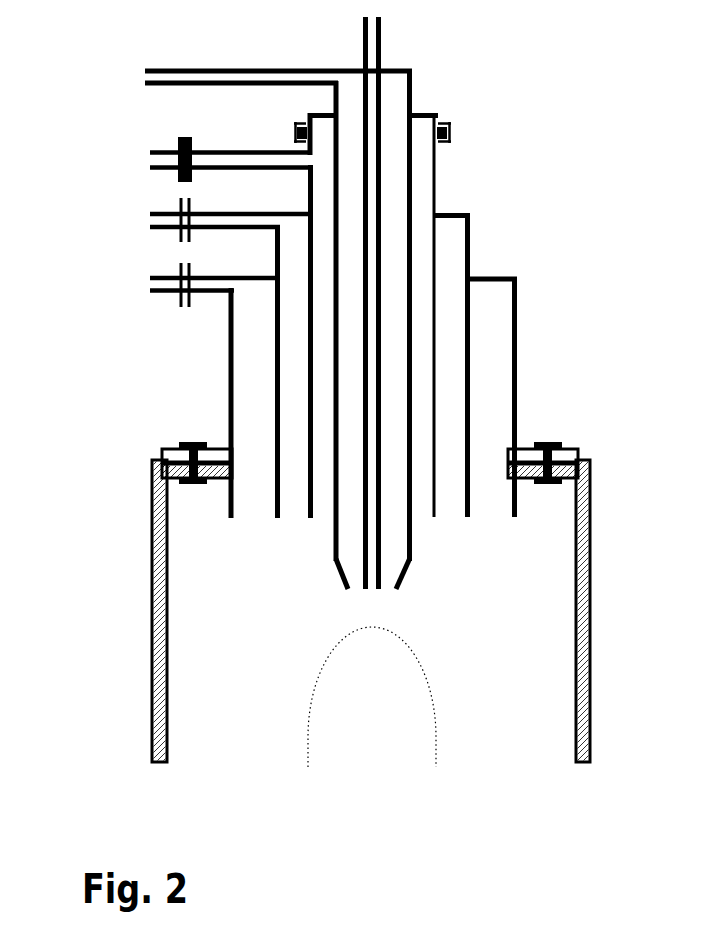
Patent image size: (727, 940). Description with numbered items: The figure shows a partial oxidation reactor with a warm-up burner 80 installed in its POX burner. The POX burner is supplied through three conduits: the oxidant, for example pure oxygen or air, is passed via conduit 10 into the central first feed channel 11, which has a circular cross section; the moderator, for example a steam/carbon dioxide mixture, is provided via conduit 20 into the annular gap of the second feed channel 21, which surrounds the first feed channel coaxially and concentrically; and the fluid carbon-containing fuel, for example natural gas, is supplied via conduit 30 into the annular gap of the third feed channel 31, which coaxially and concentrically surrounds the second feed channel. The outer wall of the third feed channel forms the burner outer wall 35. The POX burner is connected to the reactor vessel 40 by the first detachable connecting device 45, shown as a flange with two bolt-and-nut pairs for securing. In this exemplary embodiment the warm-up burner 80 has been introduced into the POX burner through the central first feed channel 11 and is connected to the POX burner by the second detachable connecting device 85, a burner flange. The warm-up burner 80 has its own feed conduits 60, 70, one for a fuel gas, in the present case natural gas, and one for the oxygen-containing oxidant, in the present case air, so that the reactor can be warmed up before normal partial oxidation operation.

The conduit 10 is at (218, 315).
The first feed channel 11 is at (422, 185).
The conduit 20 is at (205, 358).
The second feed channel 21 is at (473, 247).
The conduit 30 is at (189, 390).
The third feed channel 31 is at (500, 330).
The burner outer wall 35 is at (517, 367).
The reactor vessel 40 is at (152, 627).
The first detachable connecting device 45 is at (163, 453).
The feed conduit 60 is at (254, 308).
The feed conduit 70 is at (381, 23).
The warm-up burner 80 is at (333, 548).
The second detachable connecting device 85 is at (293, 133).